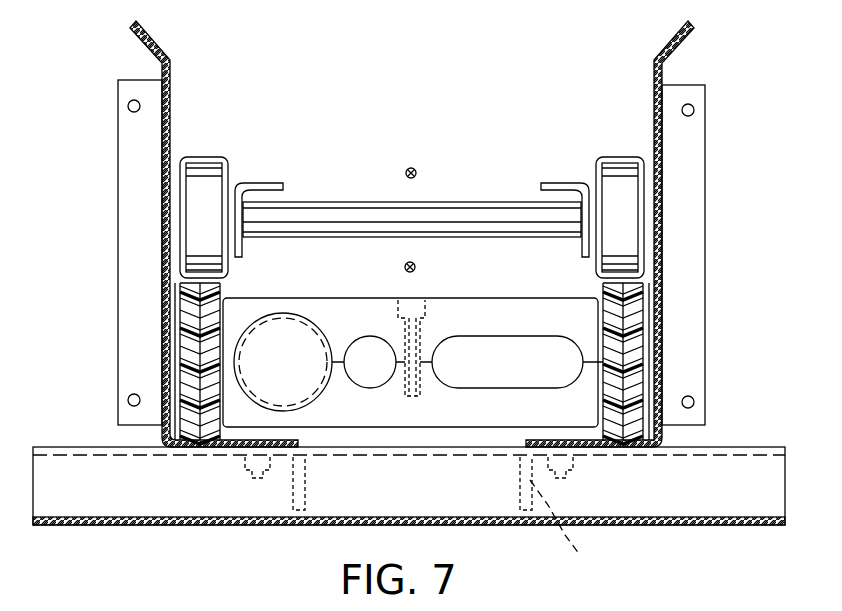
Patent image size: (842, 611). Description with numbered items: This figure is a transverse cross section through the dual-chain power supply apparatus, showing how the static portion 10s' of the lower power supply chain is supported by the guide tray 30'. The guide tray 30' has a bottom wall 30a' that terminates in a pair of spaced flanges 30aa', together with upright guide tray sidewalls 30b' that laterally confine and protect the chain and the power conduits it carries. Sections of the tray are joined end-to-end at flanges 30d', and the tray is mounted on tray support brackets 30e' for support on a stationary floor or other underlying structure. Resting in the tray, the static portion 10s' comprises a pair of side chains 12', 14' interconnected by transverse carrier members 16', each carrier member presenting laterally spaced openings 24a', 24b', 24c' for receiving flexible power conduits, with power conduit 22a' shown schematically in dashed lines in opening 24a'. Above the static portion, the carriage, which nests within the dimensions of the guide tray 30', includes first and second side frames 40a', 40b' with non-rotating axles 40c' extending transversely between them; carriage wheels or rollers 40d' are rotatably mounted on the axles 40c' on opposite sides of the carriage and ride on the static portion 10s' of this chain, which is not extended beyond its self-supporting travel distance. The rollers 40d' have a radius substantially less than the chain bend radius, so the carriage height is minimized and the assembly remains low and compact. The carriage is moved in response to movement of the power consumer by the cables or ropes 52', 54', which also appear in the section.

The guide tray 30' is at (214, 234).
The guide tray sidewalls 30b' is at (408, 234).
The flanges 30d' is at (373, 252).
The carriage wheels or rollers 40d' is at (408, 217).
The first side frame 40a' is at (277, 194).
The second side frame 40b' is at (551, 194).
The non-rotating axles 40c' is at (412, 240).
The static portion 10s' is at (413, 261).
The cables or ropes 54' is at (440, 170).
The cables or ropes 52' is at (439, 261).
The transverse carrier members 16' is at (507, 321).
The opening 24a' is at (191, 357).
The power conduit 22a' is at (188, 362).
The side chain 12' is at (350, 361).
The side chain 14' is at (469, 363).
The tray support brackets 30e' is at (409, 511).
The bottom wall 30a' is at (459, 511).
The opening 24b' is at (332, 460).
The opening 24c' is at (525, 488).
The spaced flanges 30aa' is at (592, 533).